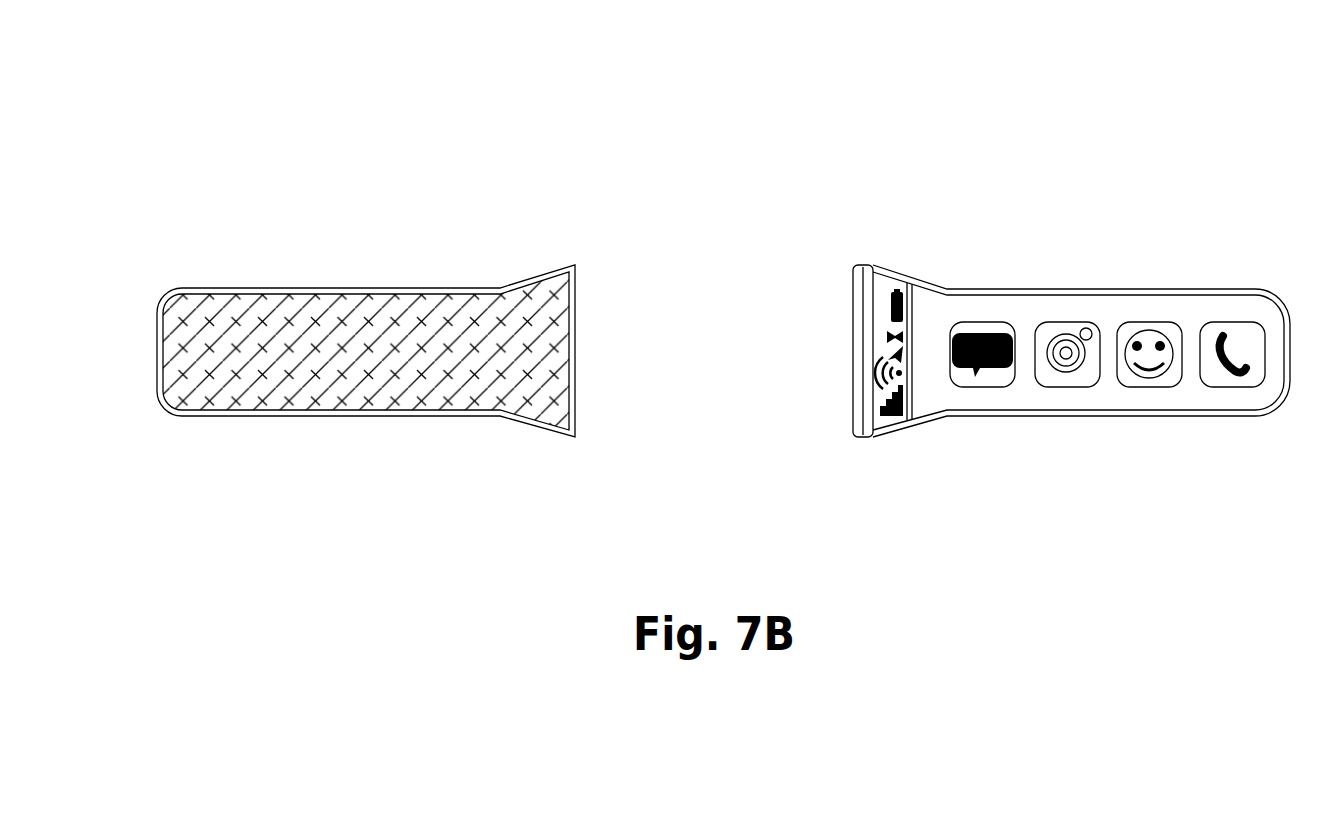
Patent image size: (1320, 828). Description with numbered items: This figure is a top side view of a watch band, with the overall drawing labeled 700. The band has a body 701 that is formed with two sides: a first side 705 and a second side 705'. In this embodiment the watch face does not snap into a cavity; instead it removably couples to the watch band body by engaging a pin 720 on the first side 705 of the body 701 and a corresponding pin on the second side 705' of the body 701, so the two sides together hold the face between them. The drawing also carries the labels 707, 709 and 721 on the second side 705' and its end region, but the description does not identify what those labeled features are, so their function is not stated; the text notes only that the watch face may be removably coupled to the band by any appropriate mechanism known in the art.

The wearable device system 700 is at (202, 84).
The body 701 is at (480, 226).
The first side 705 is at (366, 325).
The second side 705' is at (1081, 325).
The display with application icons 707 is at (1141, 408).
The status indicators 709 is at (893, 283).
The pin 720 is at (577, 333).
The second band end connector 721 is at (855, 337).